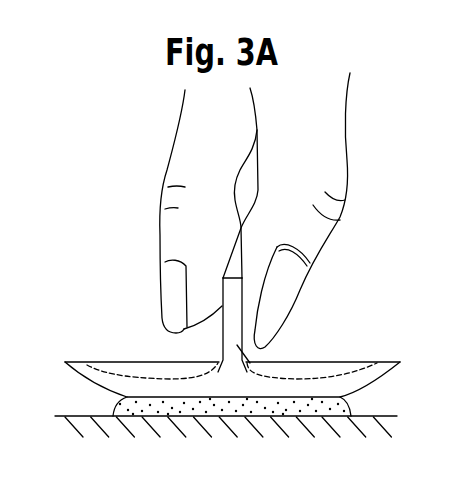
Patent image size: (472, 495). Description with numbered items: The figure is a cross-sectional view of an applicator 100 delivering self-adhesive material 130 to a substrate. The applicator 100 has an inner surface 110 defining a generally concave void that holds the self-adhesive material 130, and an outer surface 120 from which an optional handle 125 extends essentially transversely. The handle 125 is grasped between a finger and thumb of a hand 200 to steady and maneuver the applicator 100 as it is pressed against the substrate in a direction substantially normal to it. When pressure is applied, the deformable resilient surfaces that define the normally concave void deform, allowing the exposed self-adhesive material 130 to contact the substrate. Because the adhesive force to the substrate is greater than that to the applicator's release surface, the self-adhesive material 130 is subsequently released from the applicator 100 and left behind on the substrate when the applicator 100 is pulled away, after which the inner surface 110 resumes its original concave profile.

The applicator 100 is at (112, 342).
The inner surface 110 is at (368, 381).
The outer surface 120 is at (360, 368).
The handle 125 is at (243, 333).
The self-adhesive material 130 is at (115, 405).
The hand 200 is at (327, 120).